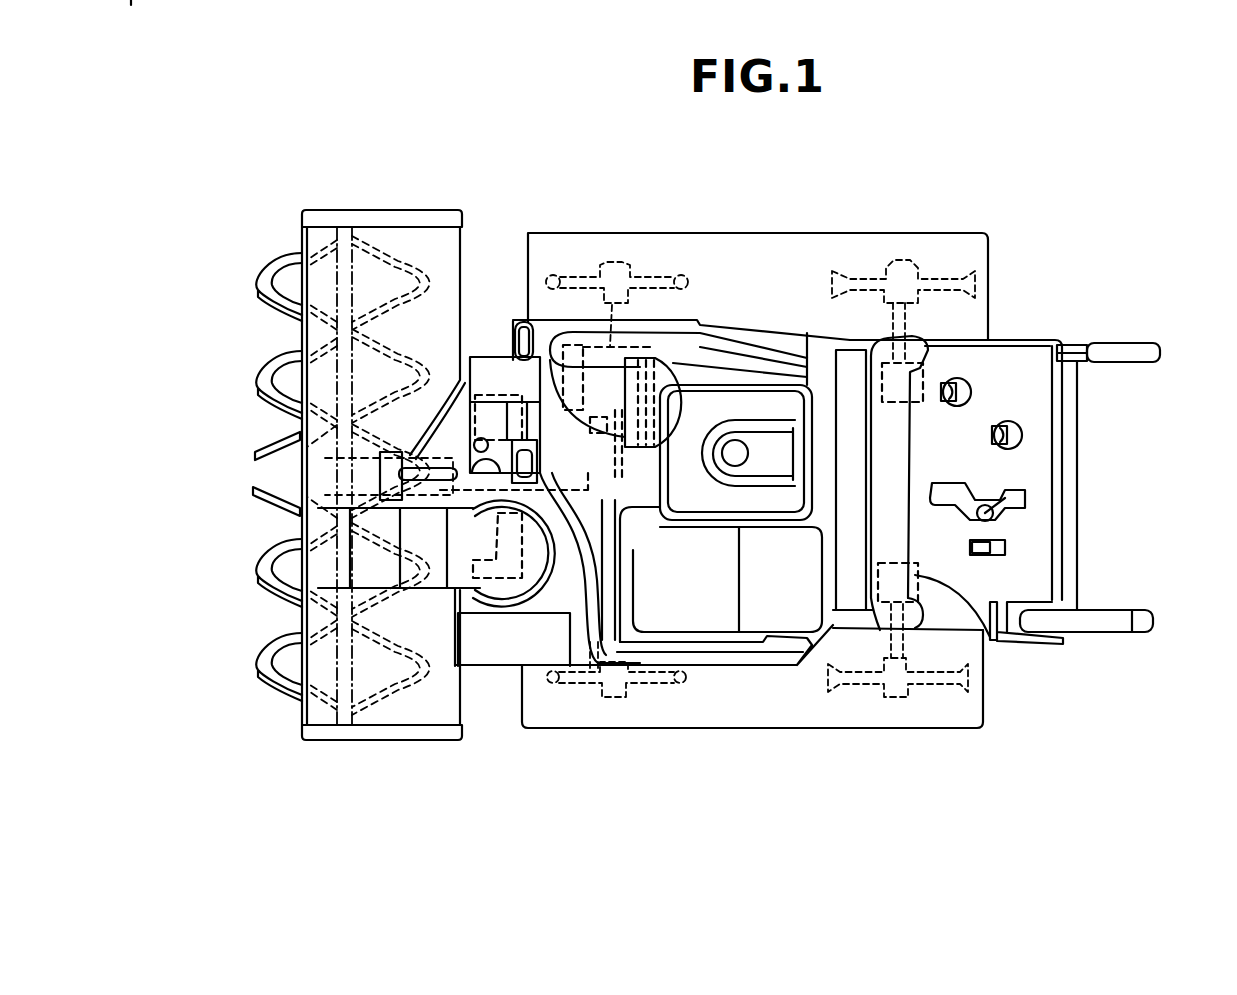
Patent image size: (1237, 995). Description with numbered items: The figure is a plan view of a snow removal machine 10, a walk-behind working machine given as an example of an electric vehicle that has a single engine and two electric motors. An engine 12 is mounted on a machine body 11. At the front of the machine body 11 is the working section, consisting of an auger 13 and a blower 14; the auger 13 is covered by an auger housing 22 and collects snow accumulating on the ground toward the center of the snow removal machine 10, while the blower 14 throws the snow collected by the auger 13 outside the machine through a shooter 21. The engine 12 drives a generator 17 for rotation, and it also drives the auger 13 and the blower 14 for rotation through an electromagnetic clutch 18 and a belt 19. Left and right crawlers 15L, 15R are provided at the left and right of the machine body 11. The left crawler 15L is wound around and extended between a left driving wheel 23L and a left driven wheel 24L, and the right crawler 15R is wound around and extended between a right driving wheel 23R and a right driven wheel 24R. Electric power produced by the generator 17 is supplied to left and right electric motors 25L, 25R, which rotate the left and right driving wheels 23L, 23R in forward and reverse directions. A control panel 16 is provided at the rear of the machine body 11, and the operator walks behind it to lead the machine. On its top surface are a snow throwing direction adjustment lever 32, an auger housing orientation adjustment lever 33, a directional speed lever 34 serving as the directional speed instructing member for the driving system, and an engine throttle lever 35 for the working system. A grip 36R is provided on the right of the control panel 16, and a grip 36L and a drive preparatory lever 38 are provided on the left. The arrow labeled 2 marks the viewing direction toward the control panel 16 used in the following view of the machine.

The snow removal machine 10 is at (948, 165).
The section line arrow 2 is at (1198, 476).
The machine body 11 is at (830, 627).
The engine 12 is at (735, 395).
The auger 13 is at (262, 402).
The blower 14 is at (503, 563).
The right crawler 15R is at (782, 262).
The left crawler 15L is at (797, 707).
The control panel 16 is at (1025, 556).
The generator 17 is at (555, 340).
The electromagnetic clutch 18 is at (515, 318).
The belt 19 is at (603, 660).
The shooter 21 is at (372, 570).
The auger housing 22 is at (430, 245).
The right driving wheel 23R is at (935, 270).
The left driving wheel 23L is at (958, 700).
The right driven wheel 24R is at (648, 268).
The left driven wheel 24L is at (648, 683).
The right electric motor 25R is at (932, 350).
The left electric motor 25L is at (985, 630).
The snow throwing direction adjustment lever 32 is at (963, 392).
The auger housing orientation adjustment lever 33 is at (1014, 436).
The directional speed lever 34 is at (985, 513).
The engine throttle lever 35 is at (1000, 545).
The right grip 36R is at (1130, 355).
The left grip 36L is at (1145, 630).
The drive preparatory lever 38 is at (1087, 620).